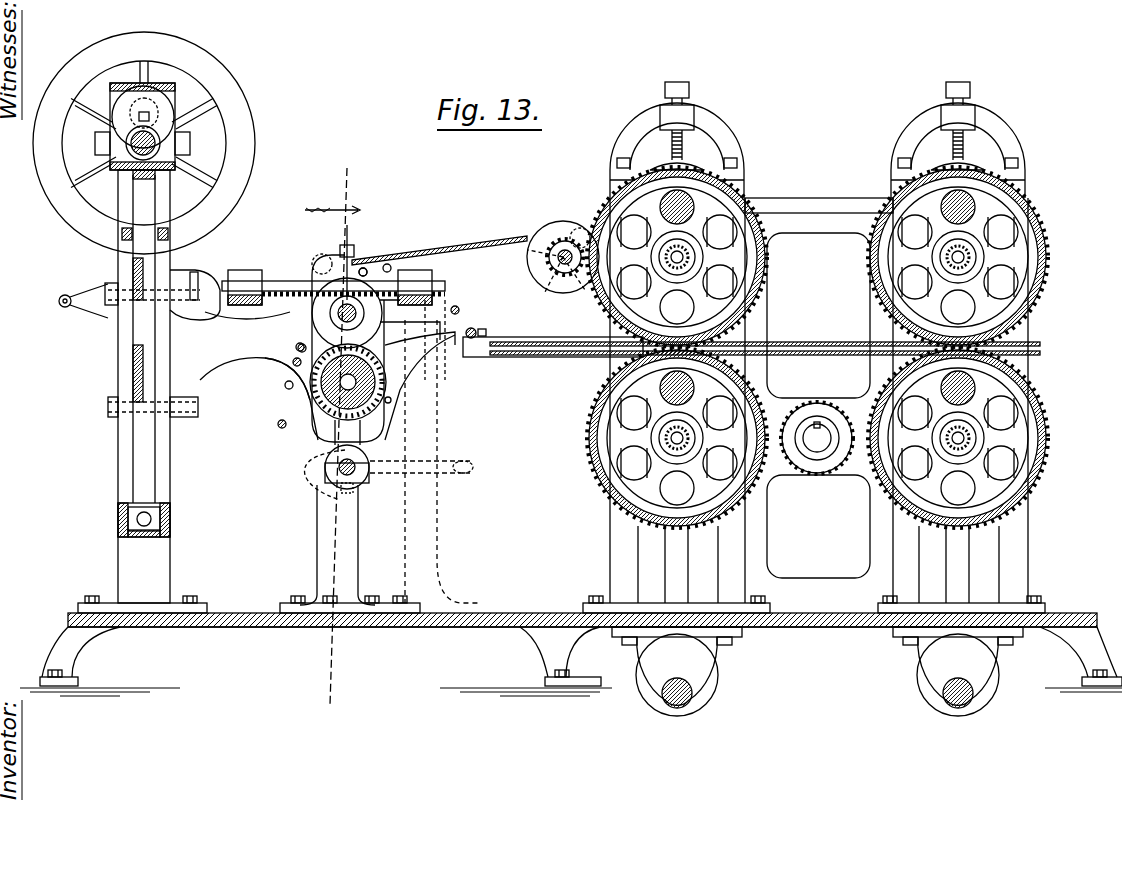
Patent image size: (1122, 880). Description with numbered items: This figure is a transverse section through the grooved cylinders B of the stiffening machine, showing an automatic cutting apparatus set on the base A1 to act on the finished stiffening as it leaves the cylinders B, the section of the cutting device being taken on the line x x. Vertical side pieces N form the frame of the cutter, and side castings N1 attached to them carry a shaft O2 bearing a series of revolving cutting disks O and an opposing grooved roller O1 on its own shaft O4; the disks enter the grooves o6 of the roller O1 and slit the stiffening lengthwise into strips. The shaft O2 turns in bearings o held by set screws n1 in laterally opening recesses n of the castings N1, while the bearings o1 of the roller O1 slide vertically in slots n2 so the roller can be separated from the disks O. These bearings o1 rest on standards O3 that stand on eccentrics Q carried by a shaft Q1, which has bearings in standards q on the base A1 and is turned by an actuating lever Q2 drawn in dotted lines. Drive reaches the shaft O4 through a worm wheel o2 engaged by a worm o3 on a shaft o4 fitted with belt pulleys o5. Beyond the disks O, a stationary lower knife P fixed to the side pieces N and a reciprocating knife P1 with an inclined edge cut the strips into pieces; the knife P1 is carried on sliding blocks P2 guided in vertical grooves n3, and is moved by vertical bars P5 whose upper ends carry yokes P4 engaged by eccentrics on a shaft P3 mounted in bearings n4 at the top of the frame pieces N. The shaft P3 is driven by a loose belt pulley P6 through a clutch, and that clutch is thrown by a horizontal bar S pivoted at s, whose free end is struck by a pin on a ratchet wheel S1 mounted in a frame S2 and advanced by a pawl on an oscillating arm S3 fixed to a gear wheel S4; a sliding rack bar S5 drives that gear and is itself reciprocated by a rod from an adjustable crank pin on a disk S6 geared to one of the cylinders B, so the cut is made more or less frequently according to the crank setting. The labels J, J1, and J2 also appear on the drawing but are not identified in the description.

The cylinders B is at (817, 347).
The vertical side pieces N is at (128, 198).
The side castings N1 is at (312, 340).
The lower knife P is at (150, 378).
The reciprocating knife P1 is at (130, 284).
The sliding blocks P2 is at (125, 320).
The shaft P3 is at (183, 142).
The yokes P4 is at (180, 95).
The vertical bars P5 is at (145, 210).
The belt-pulley P6 is at (238, 103).
The recesses n is at (375, 300).
The set-screws n1 is at (350, 262).
The slots n2 is at (378, 415).
The vertical grooves n3 is at (120, 245).
The bearings n4 is at (190, 146).
The pivot s is at (58, 302).
The pivoted bar S is at (222, 314).
The ratchet-wheel S1 is at (278, 284).
The frame S2 is at (275, 362).
The oscillating arm S3 is at (429, 325).
The gear-wheel S4 is at (466, 248).
The rack-bar S5 is at (563, 257).
The rotating disk S6 is at (581, 228).
The cutting-disks O is at (345, 308).
The grooved roller O1 is at (320, 395).
The shaft O2 is at (340, 313).
The standards O3 is at (340, 432).
The shaft O4 is at (386, 398).
The bearings o is at (394, 260).
The bearings o1 is at (367, 264).
The worm-wheel o2 is at (294, 363).
The worm o3 is at (298, 347).
The shaft o4 is at (318, 402).
The belt pulleys o5 is at (463, 302).
The grooves o6 is at (318, 384).
The eccentrics Q is at (347, 468).
The shaft Q1 is at (360, 482).
The actuating-lever Q2 is at (425, 470).
The standards q is at (380, 456).
The base A1 is at (252, 612).
The slide J is at (545, 346).
The stud J1 is at (476, 323).
The rack bars J2 is at (487, 352).
The section line x is at (332, 437).